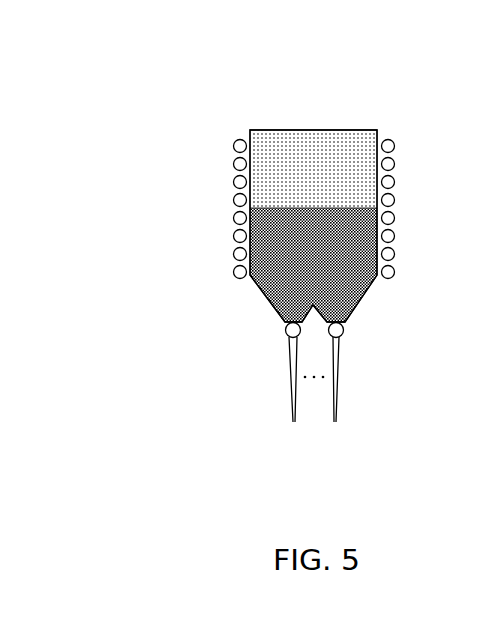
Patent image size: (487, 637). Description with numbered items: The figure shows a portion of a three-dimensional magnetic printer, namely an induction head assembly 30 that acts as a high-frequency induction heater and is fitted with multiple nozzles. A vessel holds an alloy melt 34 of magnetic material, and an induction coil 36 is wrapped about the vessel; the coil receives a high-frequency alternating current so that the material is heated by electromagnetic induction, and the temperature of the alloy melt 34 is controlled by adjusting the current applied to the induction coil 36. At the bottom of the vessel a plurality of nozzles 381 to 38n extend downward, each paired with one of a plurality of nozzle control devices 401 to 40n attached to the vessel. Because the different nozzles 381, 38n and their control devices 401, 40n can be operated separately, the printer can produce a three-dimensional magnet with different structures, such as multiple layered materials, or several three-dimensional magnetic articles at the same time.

The induction head assembly 30 is at (359, 110).
The alloy melt 34 is at (258, 293).
The induction coil 36 is at (233, 200).
The nozzle control device 401 is at (287, 336).
The nozzle control device 40n is at (342, 336).
The nozzle 381 is at (292, 408).
The nozzle 38n is at (336, 408).